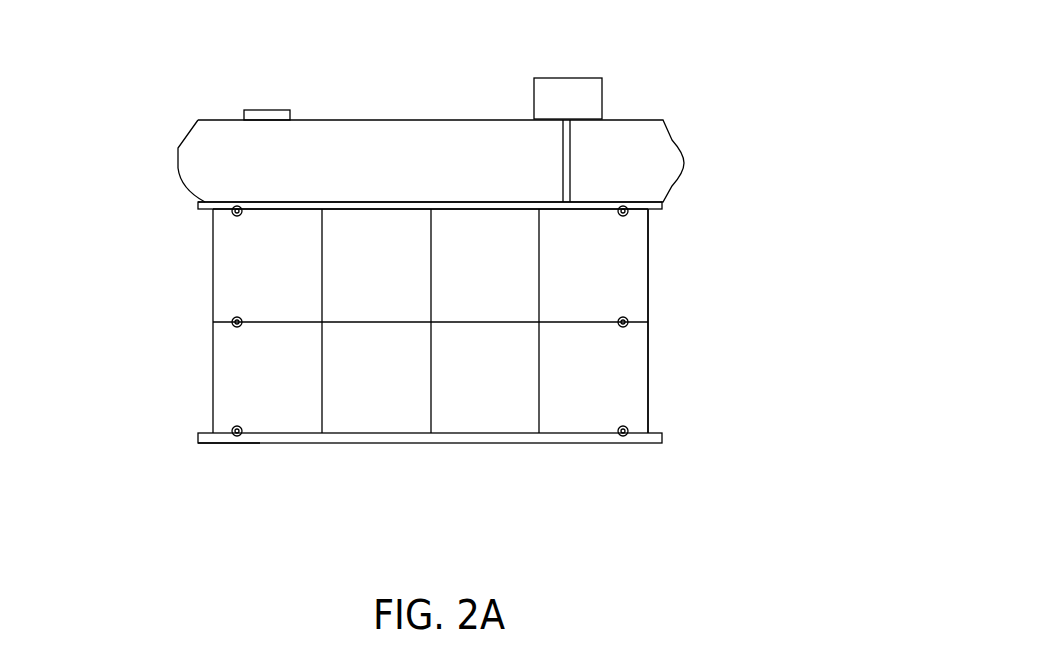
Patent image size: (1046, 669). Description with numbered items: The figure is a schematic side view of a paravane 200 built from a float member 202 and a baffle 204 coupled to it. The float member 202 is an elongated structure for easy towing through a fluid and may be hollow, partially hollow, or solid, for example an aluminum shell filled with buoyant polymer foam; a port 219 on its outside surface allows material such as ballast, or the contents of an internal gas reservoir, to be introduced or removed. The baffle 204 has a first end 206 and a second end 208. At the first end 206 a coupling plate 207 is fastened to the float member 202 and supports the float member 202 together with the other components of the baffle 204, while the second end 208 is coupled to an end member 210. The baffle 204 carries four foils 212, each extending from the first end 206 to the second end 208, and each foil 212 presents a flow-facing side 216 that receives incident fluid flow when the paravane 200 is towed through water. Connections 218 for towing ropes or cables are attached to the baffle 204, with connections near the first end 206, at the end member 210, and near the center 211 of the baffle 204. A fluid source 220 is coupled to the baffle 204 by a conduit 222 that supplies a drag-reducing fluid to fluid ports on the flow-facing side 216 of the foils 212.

The paravane 200 is at (706, 70).
The float member 202 is at (427, 157).
The baffle 204 is at (458, 371).
The first end 206 is at (200, 212).
The coupling plate 207 is at (190, 184).
The second end 208 is at (225, 443).
The end member 210 is at (585, 443).
The center 211 is at (652, 323).
The foil 212 is at (286, 405).
The flow-facing side 216 is at (650, 387).
The connections 218 is at (237, 216).
The port 219 is at (285, 110).
The fluid source 220 is at (568, 98).
The conduit 222 is at (572, 160).